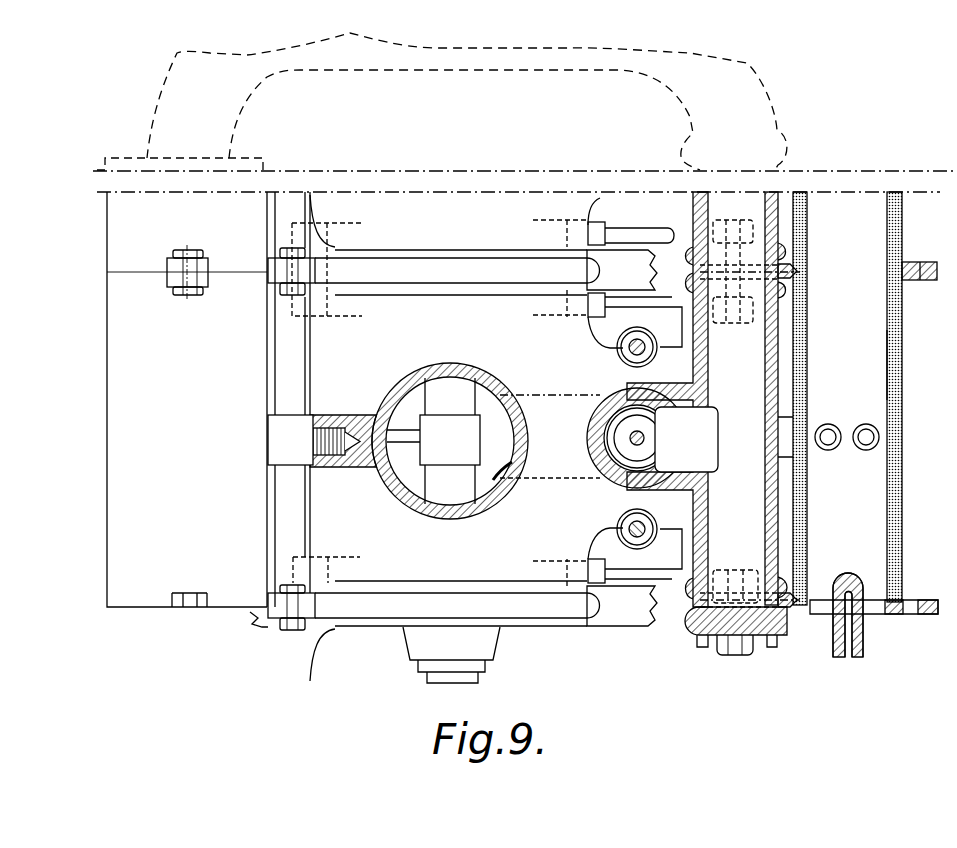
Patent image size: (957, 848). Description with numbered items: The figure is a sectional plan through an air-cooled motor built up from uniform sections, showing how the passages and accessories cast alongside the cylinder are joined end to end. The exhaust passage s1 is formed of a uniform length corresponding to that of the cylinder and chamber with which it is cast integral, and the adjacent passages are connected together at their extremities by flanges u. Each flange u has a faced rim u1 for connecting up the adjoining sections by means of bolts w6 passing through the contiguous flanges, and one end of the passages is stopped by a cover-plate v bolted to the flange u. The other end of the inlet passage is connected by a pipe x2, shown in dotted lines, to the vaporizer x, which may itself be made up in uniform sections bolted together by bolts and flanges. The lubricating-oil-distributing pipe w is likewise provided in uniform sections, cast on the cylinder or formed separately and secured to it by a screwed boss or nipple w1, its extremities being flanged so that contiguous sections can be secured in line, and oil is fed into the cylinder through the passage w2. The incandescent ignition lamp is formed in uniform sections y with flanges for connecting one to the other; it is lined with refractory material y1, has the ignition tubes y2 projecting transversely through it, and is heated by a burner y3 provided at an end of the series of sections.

The vaporizer x is at (187, 399).
The pipe x2 is at (347, 62).
The lubricating-oil-distributing pipe w is at (285, 373).
The screwed boss or nipple w1 is at (333, 413).
The oil passage w2 is at (375, 410).
The bolt w6 is at (737, 640).
The flange u is at (793, 248).
The faced rim u1 is at (807, 268).
The exhaust passage s1 is at (690, 399).
The cover-plate v is at (708, 622).
The ignition-lamp section y is at (903, 226).
The refractory material y1 is at (888, 360).
The ignition-tube y2 is at (862, 460).
The burner y3 is at (860, 582).